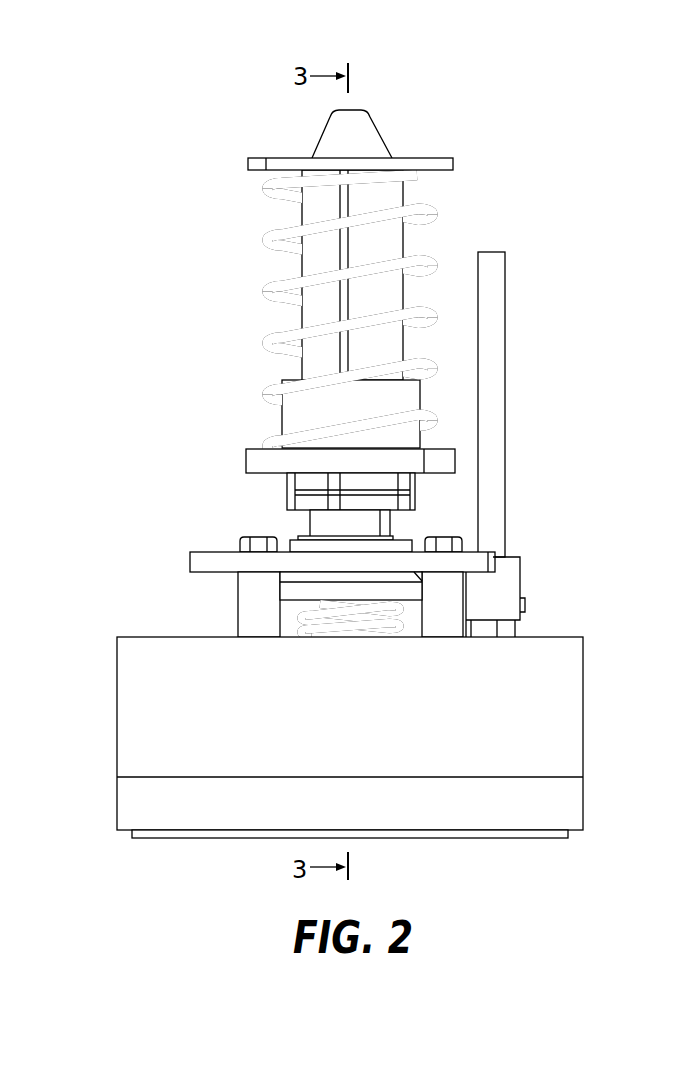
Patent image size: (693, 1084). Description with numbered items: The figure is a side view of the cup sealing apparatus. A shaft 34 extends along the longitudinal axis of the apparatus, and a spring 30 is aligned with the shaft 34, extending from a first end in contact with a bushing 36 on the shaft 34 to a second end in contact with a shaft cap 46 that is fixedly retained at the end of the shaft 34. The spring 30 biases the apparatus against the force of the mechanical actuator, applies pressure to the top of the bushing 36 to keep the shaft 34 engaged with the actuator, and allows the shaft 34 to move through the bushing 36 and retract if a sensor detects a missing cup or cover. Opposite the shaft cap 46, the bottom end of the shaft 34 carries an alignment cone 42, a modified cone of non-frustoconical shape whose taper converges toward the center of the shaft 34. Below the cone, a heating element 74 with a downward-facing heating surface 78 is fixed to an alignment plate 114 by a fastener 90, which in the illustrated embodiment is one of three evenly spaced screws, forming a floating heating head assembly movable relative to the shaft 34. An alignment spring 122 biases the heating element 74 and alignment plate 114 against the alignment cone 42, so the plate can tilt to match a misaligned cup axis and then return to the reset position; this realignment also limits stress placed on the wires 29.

The wires 29 is at (500, 313).
The spring 30 is at (425, 210).
The shaft 34 is at (373, 250).
The bushing 36 is at (447, 462).
The alignment cone 42 is at (293, 588).
The shaft cap 46 is at (453, 163).
The heating element 74 is at (567, 678).
The heating surface 78 is at (585, 810).
The fastener 90 is at (452, 535).
The alignment plate 114 is at (213, 557).
The alignment spring 122 is at (405, 615).